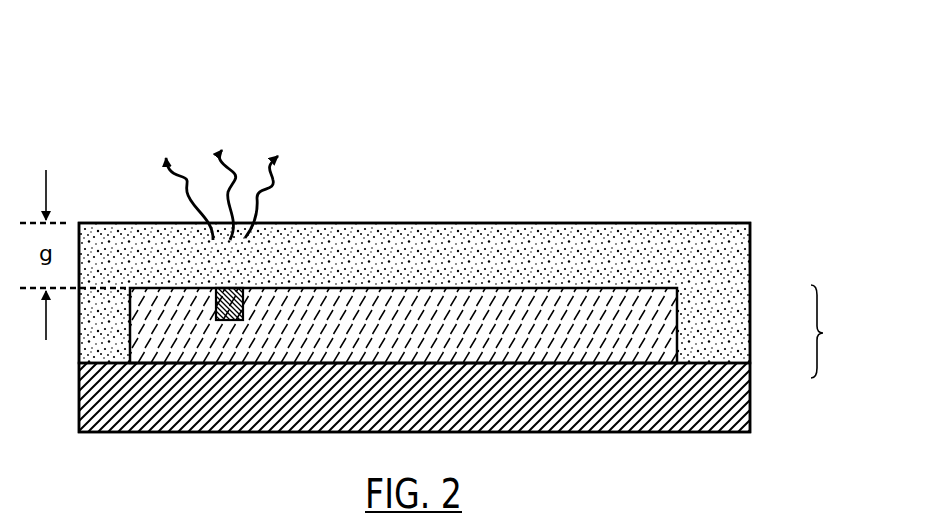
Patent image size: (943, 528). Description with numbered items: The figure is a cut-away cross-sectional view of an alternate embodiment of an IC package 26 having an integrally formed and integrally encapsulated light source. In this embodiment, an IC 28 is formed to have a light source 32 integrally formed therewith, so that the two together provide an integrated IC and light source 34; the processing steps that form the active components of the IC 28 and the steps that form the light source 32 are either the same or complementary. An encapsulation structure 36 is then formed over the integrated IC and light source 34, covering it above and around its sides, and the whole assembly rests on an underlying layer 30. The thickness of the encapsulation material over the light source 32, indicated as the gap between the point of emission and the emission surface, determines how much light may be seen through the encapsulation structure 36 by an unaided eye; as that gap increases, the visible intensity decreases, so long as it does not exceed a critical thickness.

The IC package 26 is at (110, 90).
The IC 28 is at (677, 329).
The substrate 30 is at (752, 386).
The light source 32 is at (228, 322).
The integrated IC and light source 34 is at (837, 331).
The encapsulation structure 36 is at (752, 243).